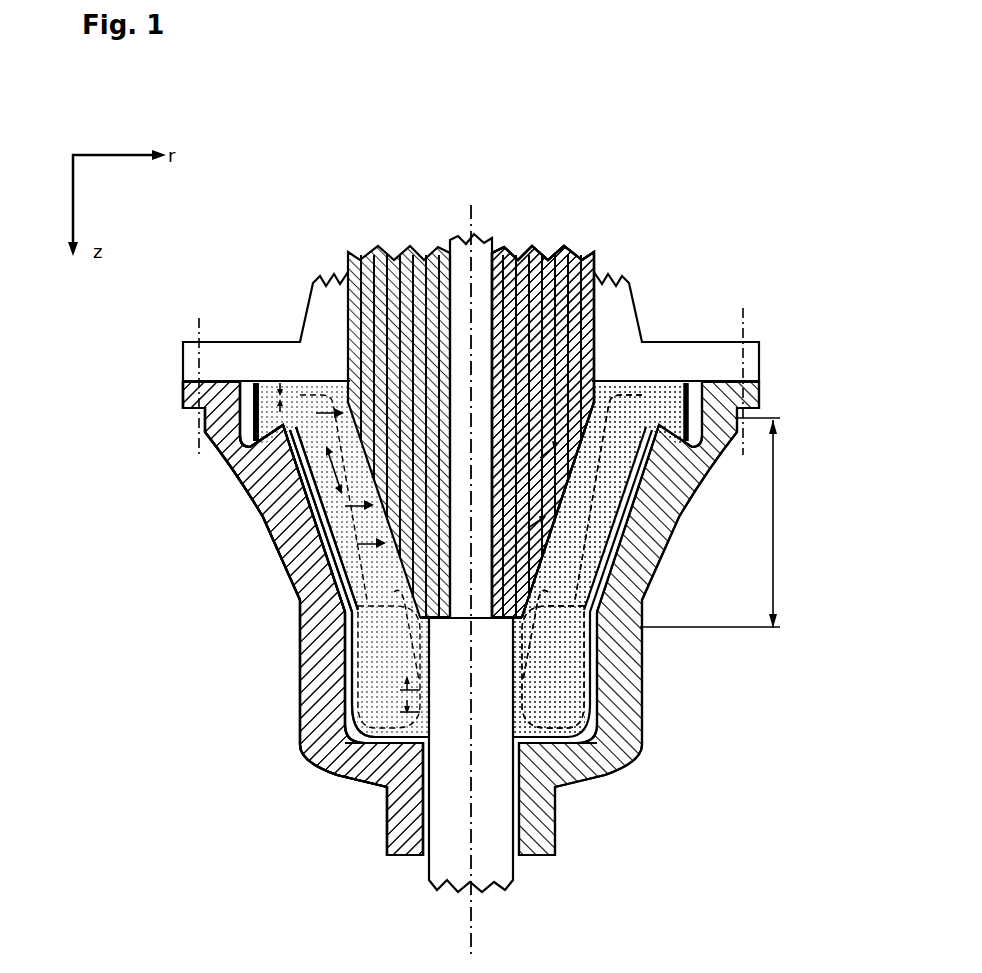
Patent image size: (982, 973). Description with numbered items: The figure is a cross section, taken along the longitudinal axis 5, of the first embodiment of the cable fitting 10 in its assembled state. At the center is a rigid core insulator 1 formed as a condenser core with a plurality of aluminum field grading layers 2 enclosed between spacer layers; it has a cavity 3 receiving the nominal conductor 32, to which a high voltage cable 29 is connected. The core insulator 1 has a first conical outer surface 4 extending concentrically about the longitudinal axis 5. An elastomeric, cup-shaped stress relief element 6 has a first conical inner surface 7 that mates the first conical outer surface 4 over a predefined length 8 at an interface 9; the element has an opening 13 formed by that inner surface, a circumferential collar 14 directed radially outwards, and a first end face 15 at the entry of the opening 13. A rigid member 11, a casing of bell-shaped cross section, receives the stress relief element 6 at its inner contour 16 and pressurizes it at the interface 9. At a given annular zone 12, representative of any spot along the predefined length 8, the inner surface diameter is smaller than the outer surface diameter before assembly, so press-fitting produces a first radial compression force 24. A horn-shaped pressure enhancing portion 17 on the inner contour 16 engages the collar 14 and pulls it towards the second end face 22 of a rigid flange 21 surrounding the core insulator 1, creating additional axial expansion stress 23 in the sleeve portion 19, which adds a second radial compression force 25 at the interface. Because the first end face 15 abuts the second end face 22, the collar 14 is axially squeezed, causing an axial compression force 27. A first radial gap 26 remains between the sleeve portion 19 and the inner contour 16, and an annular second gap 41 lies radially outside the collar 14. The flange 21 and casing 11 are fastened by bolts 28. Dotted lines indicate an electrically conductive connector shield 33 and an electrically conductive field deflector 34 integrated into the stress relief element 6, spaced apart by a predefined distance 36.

The rigid core insulator 1 is at (594, 257).
The aluminum field grading layers 2 is at (540, 257).
The cavity 3 is at (446, 245).
The first conical outer surface 4 is at (548, 530).
The longitudinal axis 5 is at (472, 910).
The elastomeric stress relief element 6 is at (550, 680).
The first conical inner surface 7 is at (600, 575).
The predefined length 8 is at (782, 492).
The interface 9 is at (578, 468).
The cable fitting 10 is at (712, 180).
The rigid member 11 is at (618, 730).
The given annular zone 12 is at (310, 640).
The opening 13 is at (602, 365).
The circumferential collar 14 is at (673, 393).
The first end face 15 is at (640, 378).
The inner contour 16 is at (335, 700).
The pressure enhancing portion 17 is at (280, 455).
The sleeve portion 19 is at (330, 663).
The rigid flange 21 is at (285, 360).
The second end face 22 is at (183, 400).
The additional axial expansion stress 23 is at (332, 480).
The first radial compression force 24 is at (345, 610).
The second radial compression force 25 is at (290, 570).
The first radial gap 26 is at (333, 513).
The axial compression force 27 is at (256, 383).
The bolts 28 is at (199, 316).
The high voltage cable 29 is at (487, 797).
The nominal conductor 32 is at (483, 243).
The electrically conductive connector shield 33 is at (527, 636).
The electrically conductive field deflector 34 is at (405, 715).
The predefined distance 36 is at (372, 742).
The annular second gap 41 is at (247, 418).